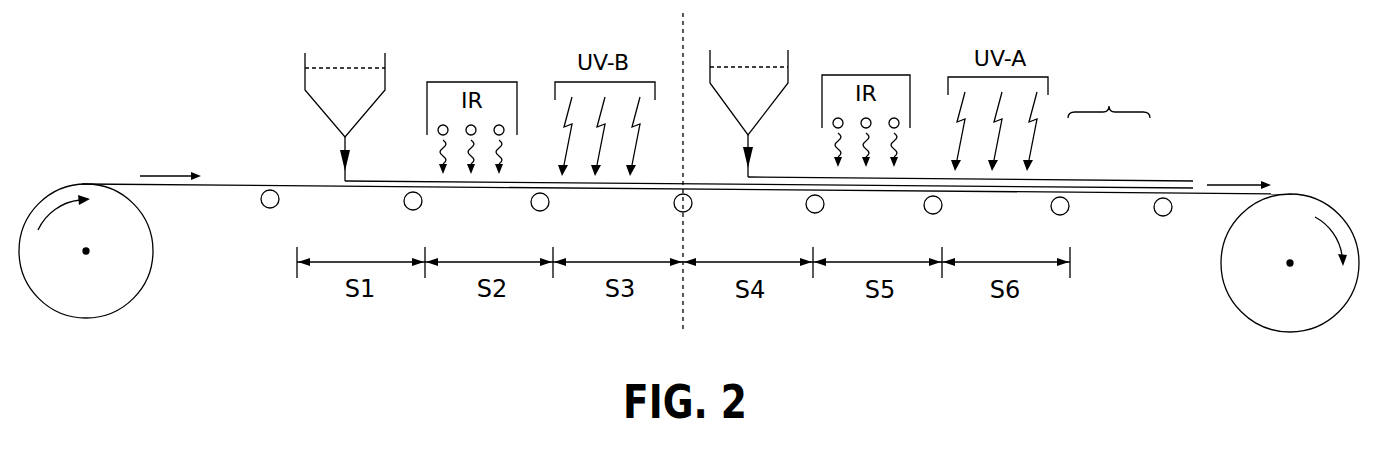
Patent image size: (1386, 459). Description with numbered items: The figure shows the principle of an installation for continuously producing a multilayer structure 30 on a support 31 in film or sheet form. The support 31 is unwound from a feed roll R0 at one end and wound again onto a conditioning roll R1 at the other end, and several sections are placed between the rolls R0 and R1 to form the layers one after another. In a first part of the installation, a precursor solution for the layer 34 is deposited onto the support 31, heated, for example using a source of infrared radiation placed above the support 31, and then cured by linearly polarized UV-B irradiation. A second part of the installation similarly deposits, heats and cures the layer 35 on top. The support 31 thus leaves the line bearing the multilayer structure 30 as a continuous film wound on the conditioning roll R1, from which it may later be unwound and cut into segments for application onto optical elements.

The multilayer structure 30 is at (1109, 97).
The support 31 is at (233, 186).
The layer 34 is at (690, 185).
The layer 35 is at (1073, 180).
The feed roll R0 is at (125, 313).
The conditioning roll R1 is at (1327, 320).